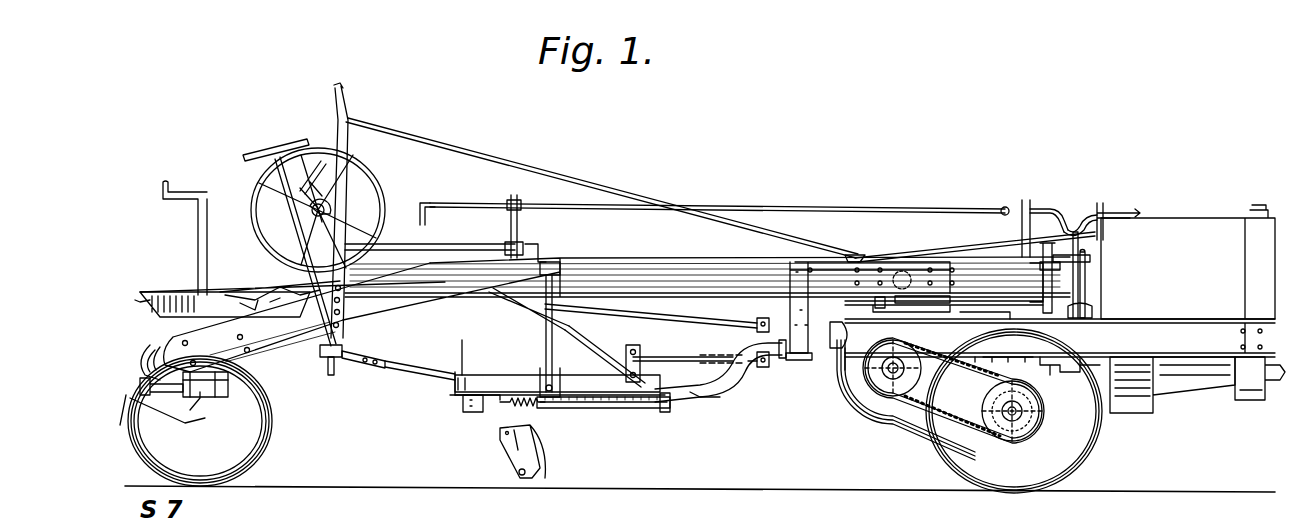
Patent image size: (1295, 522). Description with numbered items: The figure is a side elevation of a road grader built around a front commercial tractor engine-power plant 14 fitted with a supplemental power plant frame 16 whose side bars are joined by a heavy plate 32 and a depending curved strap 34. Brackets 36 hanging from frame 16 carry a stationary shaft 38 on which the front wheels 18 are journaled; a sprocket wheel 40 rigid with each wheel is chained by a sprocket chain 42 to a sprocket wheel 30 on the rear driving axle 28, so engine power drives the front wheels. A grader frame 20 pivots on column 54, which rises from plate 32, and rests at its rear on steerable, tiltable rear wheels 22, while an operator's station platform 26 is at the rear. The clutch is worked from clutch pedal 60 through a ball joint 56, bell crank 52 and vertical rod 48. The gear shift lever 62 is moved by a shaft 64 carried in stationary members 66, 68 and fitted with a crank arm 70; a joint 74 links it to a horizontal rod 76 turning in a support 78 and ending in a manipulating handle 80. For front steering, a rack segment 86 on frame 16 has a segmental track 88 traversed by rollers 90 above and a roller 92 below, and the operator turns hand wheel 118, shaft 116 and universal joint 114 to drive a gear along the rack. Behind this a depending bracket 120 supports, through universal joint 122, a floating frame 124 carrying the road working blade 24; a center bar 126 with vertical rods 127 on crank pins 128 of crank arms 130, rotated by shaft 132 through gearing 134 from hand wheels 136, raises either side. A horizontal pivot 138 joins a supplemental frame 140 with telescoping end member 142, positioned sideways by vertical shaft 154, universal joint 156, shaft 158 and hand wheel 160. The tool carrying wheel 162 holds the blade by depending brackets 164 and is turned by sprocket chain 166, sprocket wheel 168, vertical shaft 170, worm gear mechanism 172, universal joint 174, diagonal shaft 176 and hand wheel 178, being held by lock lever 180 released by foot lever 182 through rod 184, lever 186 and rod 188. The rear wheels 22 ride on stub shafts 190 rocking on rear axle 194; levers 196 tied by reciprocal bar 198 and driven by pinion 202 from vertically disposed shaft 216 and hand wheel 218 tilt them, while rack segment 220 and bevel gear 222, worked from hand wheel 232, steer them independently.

The engine-power plant 14 is at (1128, 439).
The power plant frame 16 is at (1060, 338).
The front wheels 18 is at (1080, 461).
The grader frame 20 is at (680, 272).
The rear wheels 22 is at (258, 450).
The road working blade 24 is at (546, 459).
The operator's station platform 26 is at (145, 306).
The rear driving axle 28 is at (850, 396).
The sprocket wheel 30 is at (890, 380).
The heavy plate 32 is at (1008, 328).
The depending curved strap 34 is at (1250, 402).
The bracket 36 is at (1050, 356).
The stationary shaft 38 is at (1032, 420).
The sprocket wheel 40 is at (1000, 432).
The sprocket chain 42 is at (915, 408).
The vertically extending rod 48 is at (1086, 312).
The bell crank 52 is at (1092, 262).
The column 54 is at (1062, 268).
The ball joint 56 is at (905, 270).
The clutch pedal 60 is at (184, 290).
The gear shift lever 62 is at (1090, 252).
The shaft 64 is at (1048, 208).
The stationary member 66 is at (1100, 203).
The stationary member 68 is at (1026, 200).
The crank arm 70 is at (1072, 220).
The joint 74 is at (1000, 208).
The horizontally disposed rod 76 is at (800, 206).
The support 78 is at (524, 226).
The manipulating handle 80 is at (420, 203).
The rack segment 86 is at (975, 303).
The segmental track 88 is at (930, 294).
The rollers 90 is at (880, 296).
The roller 92 is at (840, 339).
The universal joint 114 is at (850, 255).
The rearwardly extending shaft 116 is at (505, 166).
The hand wheel 118 is at (345, 102).
The depending bracket 120 is at (800, 305).
The universal joint 122 is at (800, 362).
The floating frame 124 is at (500, 375).
The center bar 126 is at (500, 403).
The vertically extending rod 127 is at (555, 320).
The crank pin 128 is at (562, 268).
The crank arm 130 is at (545, 248).
The horizontally extending shaft 132 is at (457, 239).
The gearing 134 is at (298, 238).
The hand wheel 136 is at (382, 187).
The horizontal pivot 138 is at (462, 345).
The supplemental frame 140 is at (418, 368).
The telescoping end member 142 is at (372, 356).
The vertical shaft 154 is at (333, 376).
The universal joint 156 is at (320, 355).
The upwardly extending shaft 158 is at (297, 198).
The hand wheel 160 is at (252, 164).
The tool carrying wheel 162 is at (475, 408).
The depending brackets 164 is at (530, 408).
The sprocket chain 166 is at (650, 415).
The sprocket wheel 168 is at (662, 414).
The vertical shaft 170 is at (690, 386).
The worm gear mechanism 172 is at (685, 355).
The universal joint 174 is at (641, 365).
The diagonal shaft 176 is at (603, 358).
The hand wheel 178 is at (300, 147).
The lock lever 180 is at (562, 372).
The foot lever 182 is at (240, 295).
The rod 184 is at (722, 330).
The lever 186 is at (760, 325).
The rod 188 is at (757, 366).
The stub shaft 190 is at (194, 425).
The rear axle 194 is at (208, 364).
The vertically extending lever 196 is at (222, 414).
The reciprocal bar 198 is at (232, 388).
The pinion 202 is at (232, 396).
The vertically disposed shaft 216 is at (186, 192).
The hand wheel 218 is at (170, 412).
The rack segment 220 is at (124, 435).
The bevel gear 222 is at (150, 357).
The hand wheel 232 is at (148, 292).